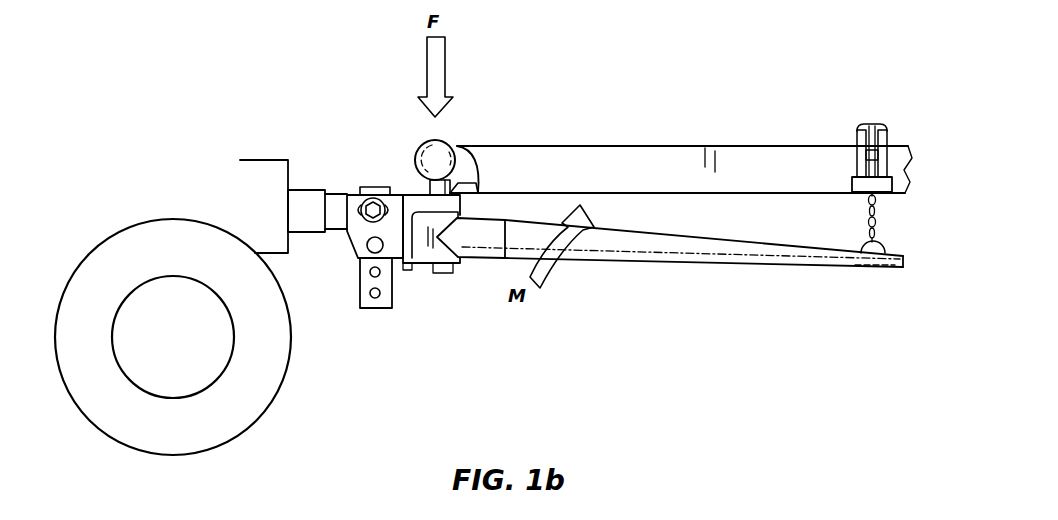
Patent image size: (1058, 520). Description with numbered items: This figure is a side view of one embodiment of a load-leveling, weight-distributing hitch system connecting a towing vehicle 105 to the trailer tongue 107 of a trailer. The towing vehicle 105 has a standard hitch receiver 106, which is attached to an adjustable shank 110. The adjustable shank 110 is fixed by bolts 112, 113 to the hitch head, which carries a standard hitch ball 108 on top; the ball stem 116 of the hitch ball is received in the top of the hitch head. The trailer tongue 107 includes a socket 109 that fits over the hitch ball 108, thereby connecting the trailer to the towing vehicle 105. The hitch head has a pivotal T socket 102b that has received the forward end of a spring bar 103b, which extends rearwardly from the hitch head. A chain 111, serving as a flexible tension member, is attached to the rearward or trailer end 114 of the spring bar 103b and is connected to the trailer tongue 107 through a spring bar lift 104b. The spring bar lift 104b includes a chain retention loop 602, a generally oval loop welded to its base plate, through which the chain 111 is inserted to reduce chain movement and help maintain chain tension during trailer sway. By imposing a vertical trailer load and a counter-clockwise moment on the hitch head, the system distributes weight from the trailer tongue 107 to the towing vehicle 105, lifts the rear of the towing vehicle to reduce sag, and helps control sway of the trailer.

The towing vehicle 105 is at (240, 211).
The hitch receiver 106 is at (303, 188).
The trailer tongue 107 is at (642, 147).
The hitch ball 108 is at (405, 195).
The socket 109 is at (438, 140).
The adjustable shank 110 is at (392, 298).
The chain 111 is at (880, 229).
The bolt 112 is at (357, 206).
The bolt 113 is at (366, 248).
The trailer end of spring bar 114 is at (905, 265).
The ball stem 116 is at (477, 183).
The pivotal T socket 102b is at (475, 253).
The spring bar 103b is at (657, 262).
The spring bar lift 104b is at (897, 150).
The chain retention loop 602 is at (900, 182).